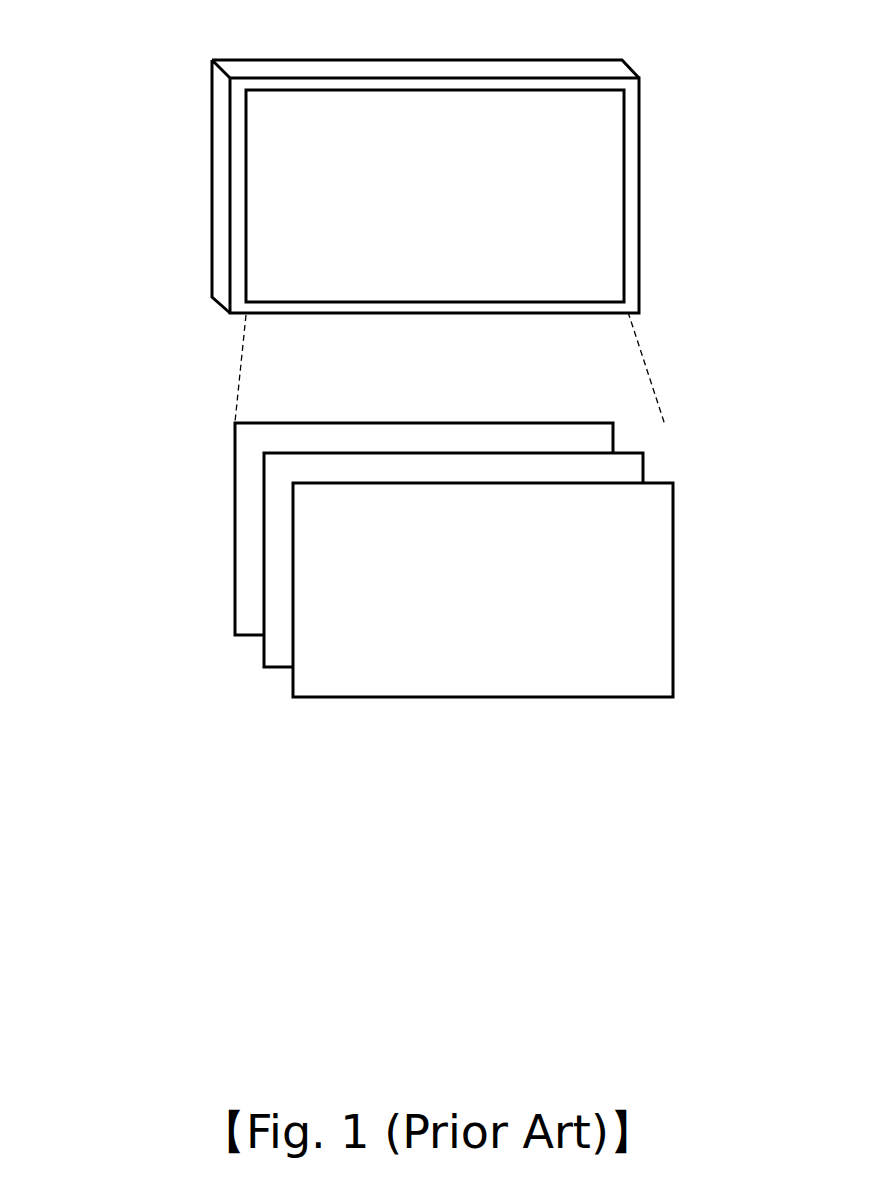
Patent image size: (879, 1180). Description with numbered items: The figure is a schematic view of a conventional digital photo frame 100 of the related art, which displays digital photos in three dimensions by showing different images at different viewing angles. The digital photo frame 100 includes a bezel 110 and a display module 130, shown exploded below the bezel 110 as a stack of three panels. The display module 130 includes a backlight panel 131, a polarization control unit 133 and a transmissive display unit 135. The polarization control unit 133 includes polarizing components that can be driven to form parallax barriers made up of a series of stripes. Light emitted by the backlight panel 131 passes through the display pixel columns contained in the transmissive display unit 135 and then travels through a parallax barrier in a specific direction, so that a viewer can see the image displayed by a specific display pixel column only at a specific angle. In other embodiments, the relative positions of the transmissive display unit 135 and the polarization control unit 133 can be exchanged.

The digital photo frame 100 is at (425, 169).
The bezel 110 is at (212, 178).
The display module 130 is at (606, 137).
The backlight panel 131 is at (235, 532).
The polarization control unit 133 is at (673, 590).
The transmissive display unit 135 is at (264, 562).